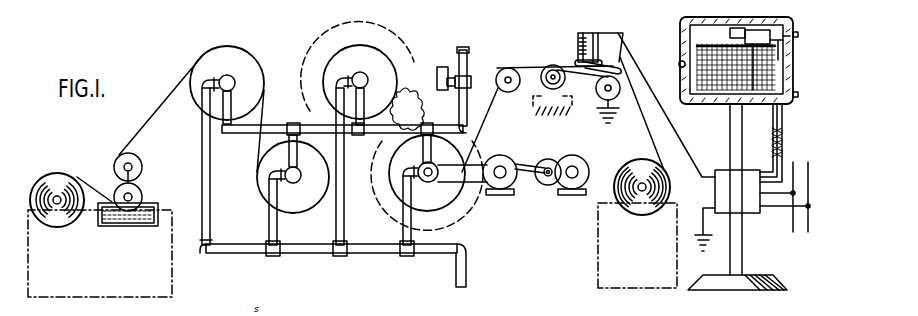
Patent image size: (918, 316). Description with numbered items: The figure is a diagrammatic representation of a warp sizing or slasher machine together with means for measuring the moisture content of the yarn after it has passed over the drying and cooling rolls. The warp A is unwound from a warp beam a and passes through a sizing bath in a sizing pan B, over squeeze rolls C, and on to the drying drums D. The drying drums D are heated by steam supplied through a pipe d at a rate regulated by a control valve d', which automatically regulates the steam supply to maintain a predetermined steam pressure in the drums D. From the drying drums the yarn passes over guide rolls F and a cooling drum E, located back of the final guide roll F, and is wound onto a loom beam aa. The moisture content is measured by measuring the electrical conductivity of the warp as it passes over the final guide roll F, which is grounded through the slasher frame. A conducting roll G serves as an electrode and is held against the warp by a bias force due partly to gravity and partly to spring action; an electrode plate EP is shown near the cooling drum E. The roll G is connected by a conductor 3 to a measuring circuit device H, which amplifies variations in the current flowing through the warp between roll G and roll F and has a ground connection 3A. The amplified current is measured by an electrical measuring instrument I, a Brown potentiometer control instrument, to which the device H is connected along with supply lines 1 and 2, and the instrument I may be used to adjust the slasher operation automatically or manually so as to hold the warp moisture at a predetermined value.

The warp beam a is at (57, 188).
The warp A is at (172, 90).
The sizing pan B is at (128, 228).
The squeeze rolls C is at (137, 195).
The drying drums D is at (243, 66).
The control valve d' is at (434, 66).
The pipe d is at (471, 51).
The cooling drum E is at (550, 66).
The electrode plate EP is at (540, 107).
The guide rolls F is at (507, 86).
The conducting roll G is at (621, 51).
The electrical measuring instrument I is at (683, 47).
The conductor 3 is at (676, 133).
The ground connection 3A is at (702, 226).
The loom beam aa is at (634, 172).
The measuring circuit device H is at (737, 191).
The supply line 1 is at (791, 227).
The supply line 2 is at (806, 228).